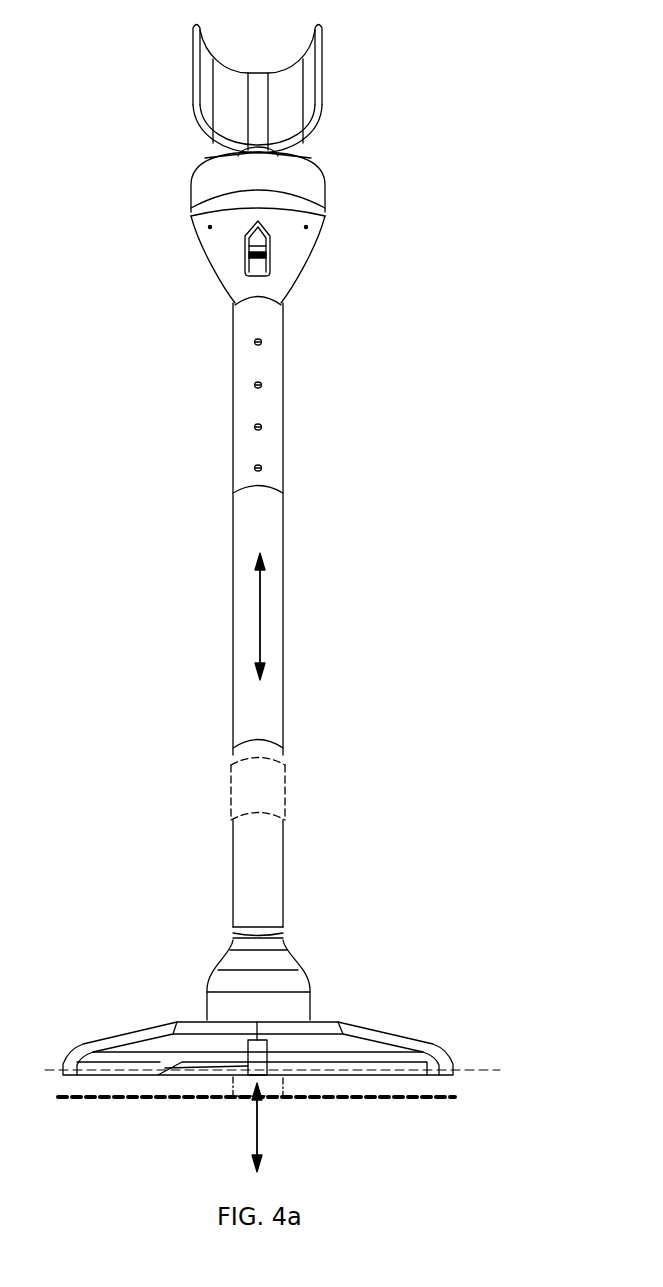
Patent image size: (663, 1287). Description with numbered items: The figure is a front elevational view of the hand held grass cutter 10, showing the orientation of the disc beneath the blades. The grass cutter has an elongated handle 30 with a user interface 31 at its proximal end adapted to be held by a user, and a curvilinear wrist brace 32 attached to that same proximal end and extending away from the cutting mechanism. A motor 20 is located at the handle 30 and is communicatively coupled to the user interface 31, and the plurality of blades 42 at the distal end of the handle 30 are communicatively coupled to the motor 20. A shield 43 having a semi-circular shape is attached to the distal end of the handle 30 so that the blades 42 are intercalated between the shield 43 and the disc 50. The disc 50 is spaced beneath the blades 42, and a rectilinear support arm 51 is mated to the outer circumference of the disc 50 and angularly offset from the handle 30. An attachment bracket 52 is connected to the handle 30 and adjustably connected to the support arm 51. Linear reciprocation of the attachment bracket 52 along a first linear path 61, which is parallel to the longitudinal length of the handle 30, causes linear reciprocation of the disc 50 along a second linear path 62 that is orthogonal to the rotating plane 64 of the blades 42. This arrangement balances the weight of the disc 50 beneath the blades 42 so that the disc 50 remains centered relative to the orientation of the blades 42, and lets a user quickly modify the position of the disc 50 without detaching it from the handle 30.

The hand held grass cutter 10 is at (430, 155).
The curvilinear wrist brace 32 is at (233, 97).
The user interface 31 is at (270, 255).
The elongated handle 30 is at (318, 508).
The first linear path 61 is at (261, 615).
The attachment bracket 52 is at (270, 787).
The motor 20 is at (237, 985).
The shield 43 is at (356, 1030).
The rotating plane 64 is at (480, 1071).
The blades 42 is at (183, 1074).
The second linear path 62 is at (259, 1112).
The rectilinear support arm 51 is at (280, 1082).
The disc 50 is at (443, 1098).